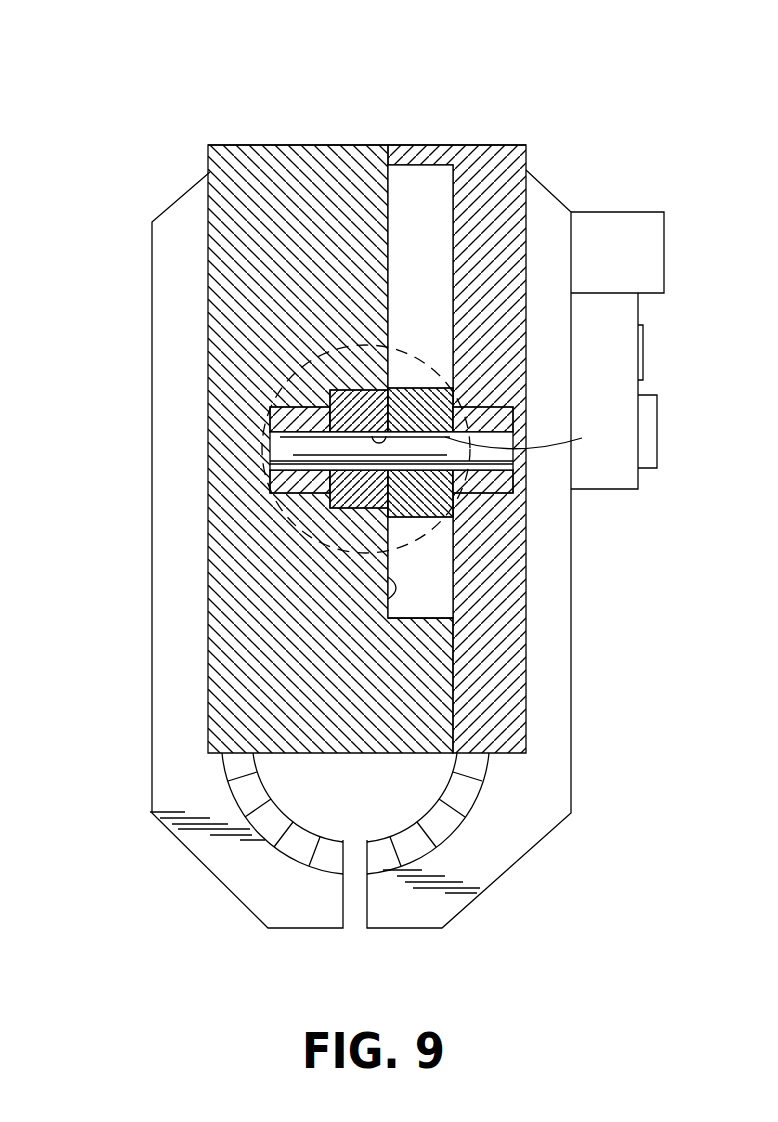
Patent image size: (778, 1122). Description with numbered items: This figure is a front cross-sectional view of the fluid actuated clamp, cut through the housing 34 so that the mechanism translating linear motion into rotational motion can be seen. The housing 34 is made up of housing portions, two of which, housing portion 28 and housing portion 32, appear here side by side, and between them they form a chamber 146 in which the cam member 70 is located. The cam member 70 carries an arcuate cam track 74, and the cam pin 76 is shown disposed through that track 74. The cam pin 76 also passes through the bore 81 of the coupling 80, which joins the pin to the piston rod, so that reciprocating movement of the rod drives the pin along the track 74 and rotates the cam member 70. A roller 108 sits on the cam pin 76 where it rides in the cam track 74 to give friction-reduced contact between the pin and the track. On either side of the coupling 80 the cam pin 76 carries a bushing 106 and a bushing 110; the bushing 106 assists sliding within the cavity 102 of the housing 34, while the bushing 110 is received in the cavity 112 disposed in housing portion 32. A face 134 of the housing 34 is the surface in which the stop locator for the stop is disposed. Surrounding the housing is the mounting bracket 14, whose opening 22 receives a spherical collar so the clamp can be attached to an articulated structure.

The mounting bracket 14 is at (135, 290).
The opening 22 is at (418, 797).
The housing portion 28 is at (270, 145).
The housing portion 32 is at (503, 152).
The housing 34 is at (335, 120).
The cam member 70 is at (436, 182).
The cam track 74 is at (527, 437).
The cam pin 76 is at (365, 448).
The coupling 80 is at (336, 390).
The bore 81 is at (380, 436).
The cavity 102 is at (280, 409).
The bushing 106 is at (280, 480).
The roller 108 is at (413, 443).
The bushing 110 is at (510, 407).
The cavity 112 is at (487, 491).
The face 134 is at (388, 598).
The chamber 146 is at (432, 618).